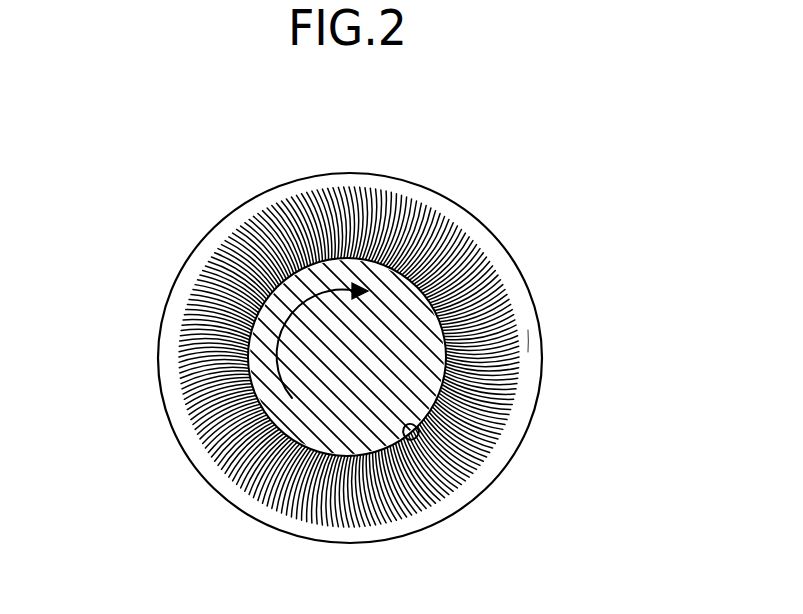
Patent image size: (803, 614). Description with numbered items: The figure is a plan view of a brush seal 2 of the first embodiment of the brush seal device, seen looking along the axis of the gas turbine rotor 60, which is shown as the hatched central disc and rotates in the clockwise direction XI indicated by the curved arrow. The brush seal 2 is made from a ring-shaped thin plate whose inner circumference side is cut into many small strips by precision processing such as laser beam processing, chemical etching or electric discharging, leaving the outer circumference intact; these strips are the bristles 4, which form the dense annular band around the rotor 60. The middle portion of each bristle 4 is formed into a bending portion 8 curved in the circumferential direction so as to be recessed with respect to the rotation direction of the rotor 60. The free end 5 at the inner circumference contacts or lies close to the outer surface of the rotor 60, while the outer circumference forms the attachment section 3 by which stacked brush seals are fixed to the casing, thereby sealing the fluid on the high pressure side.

The brush seal 2 is at (501, 210).
The attachment section 3 is at (362, 171).
The bristles 4 is at (497, 400).
The free end 5 is at (419, 431).
The bending portion 8 is at (523, 343).
The rotor 60 is at (367, 372).
The clockwise X1 direction XI is at (207, 270).